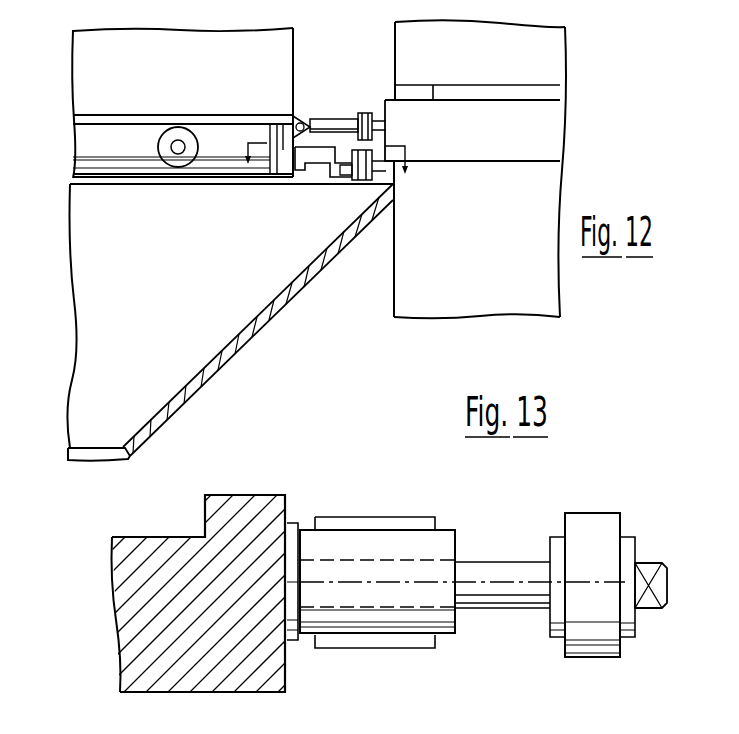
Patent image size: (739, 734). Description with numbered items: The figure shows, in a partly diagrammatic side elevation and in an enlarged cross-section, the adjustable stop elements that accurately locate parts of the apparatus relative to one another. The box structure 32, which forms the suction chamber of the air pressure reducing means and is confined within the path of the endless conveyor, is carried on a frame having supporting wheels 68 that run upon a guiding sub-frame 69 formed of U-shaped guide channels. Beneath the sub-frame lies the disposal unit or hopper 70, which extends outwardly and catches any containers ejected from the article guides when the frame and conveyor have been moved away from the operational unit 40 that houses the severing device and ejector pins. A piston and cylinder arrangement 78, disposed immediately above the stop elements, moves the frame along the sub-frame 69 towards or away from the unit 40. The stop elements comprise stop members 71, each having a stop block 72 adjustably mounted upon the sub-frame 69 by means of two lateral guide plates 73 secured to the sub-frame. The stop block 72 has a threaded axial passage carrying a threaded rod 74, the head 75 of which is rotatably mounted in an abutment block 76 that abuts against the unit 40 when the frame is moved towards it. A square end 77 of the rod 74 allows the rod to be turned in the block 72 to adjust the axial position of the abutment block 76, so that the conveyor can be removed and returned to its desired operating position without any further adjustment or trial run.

In FIG. 12, the box structure 32 is at (82, 63).
In FIG. 13, the box structure 32 is at (193, 694).
In FIG. 12, the operational unit 40 is at (548, 136).
In FIG. 12, the supporting wheels 68 is at (178, 129).
In FIG. 12, the guiding sub-frame 69 is at (77, 164).
In FIG. 12, the disposal unit or hopper 70 is at (80, 295).
In FIG. 12, the stop members 71 is at (316, 166).
In FIG. 13, the stop members 71 is at (497, 550).
In FIG. 13, the stop block 72 is at (442, 535).
In FIG. 13, the lateral guide plates 73 is at (367, 517).
In FIG. 13, the threaded rod 74 is at (488, 609).
In FIG. 13, the head 75 is at (633, 640).
In FIG. 13, the abutment block 76 is at (610, 521).
In FIG. 13, the square end 77 is at (653, 563).
In FIG. 12, the piston and cylinder arrangement 78 is at (330, 118).